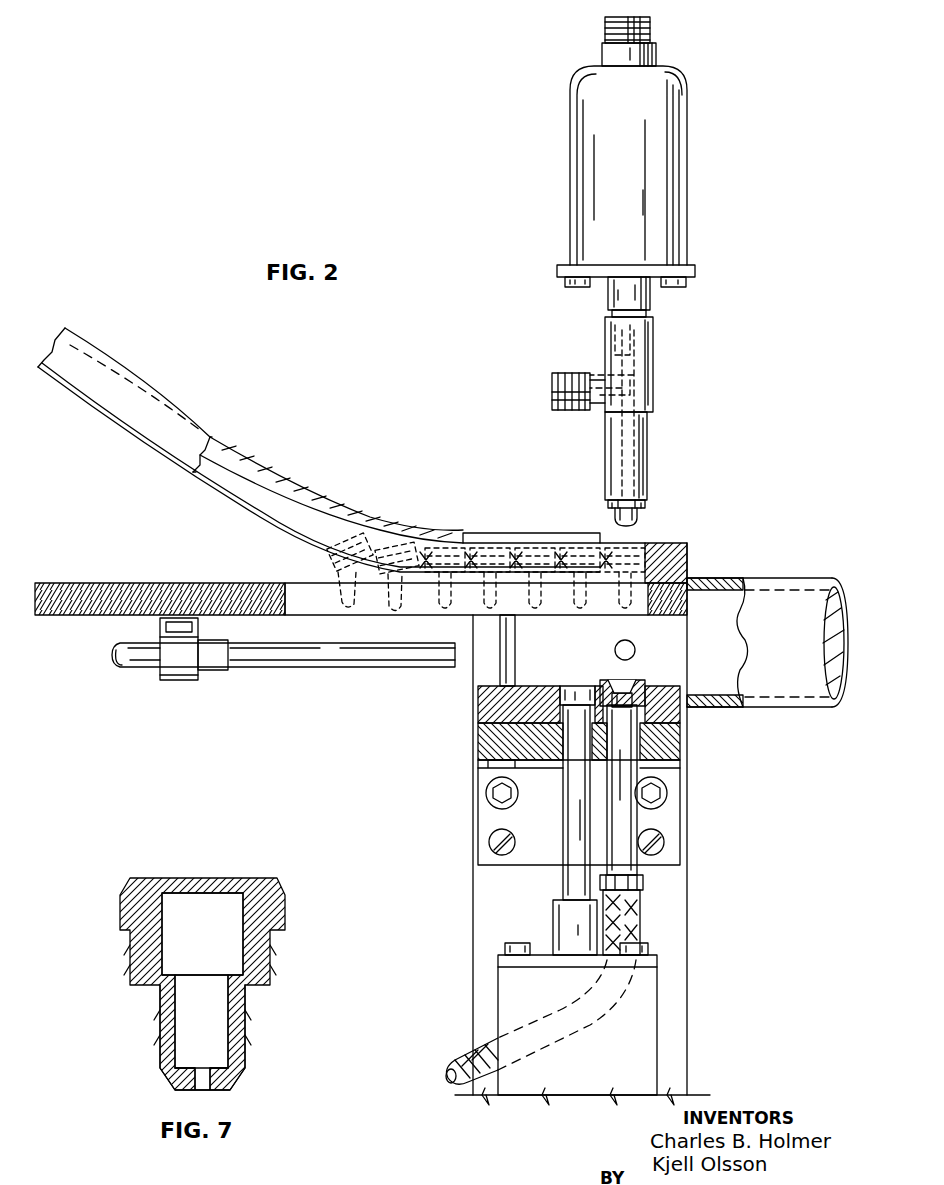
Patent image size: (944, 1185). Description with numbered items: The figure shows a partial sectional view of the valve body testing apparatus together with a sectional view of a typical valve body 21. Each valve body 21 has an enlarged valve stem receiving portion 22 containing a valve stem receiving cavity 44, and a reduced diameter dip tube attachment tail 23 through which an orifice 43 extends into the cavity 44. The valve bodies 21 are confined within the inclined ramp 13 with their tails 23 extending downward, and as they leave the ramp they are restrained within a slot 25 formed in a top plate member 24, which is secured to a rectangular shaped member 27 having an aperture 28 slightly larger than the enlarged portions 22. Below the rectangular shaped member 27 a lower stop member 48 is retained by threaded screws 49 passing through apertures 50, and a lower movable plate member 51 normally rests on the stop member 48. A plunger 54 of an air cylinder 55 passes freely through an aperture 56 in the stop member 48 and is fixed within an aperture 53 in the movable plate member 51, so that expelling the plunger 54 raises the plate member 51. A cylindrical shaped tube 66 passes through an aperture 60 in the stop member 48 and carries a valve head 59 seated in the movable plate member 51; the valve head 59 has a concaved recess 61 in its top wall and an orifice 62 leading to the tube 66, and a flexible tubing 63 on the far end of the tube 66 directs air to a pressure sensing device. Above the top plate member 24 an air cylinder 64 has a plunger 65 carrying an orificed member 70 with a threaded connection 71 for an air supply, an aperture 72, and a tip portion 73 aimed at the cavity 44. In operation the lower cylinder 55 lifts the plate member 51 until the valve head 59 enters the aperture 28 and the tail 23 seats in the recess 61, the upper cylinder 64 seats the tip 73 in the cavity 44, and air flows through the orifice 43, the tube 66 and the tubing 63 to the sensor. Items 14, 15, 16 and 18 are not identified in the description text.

In FIG. 2, the inclined ramp 13 is at (255, 456).
In FIG. 2, the plate 14 is at (692, 548).
In FIG. 2, the lever 15 is at (320, 656).
In FIG. 2, the tube 16 is at (808, 580).
In FIG. 2, the hole 18 is at (614, 647).
In FIG. 2, the valve body 21 is at (335, 551).
In FIG. 7, the valve body 21 is at (112, 950).
In FIG. 2, the enlarged valve stem receiving portion 22 is at (362, 532).
In FIG. 7, the enlarged valve stem receiving portion 22 is at (276, 955).
In FIG. 2, the dip tube attachment tail 23 is at (340, 577).
In FIG. 7, the dip tube attachment tail 23 is at (245, 1056).
In FIG. 2, the top plate member 24 is at (690, 558).
In FIG. 2, the slot 25 is at (645, 545).
In FIG. 2, the rectangular shaped member 27 is at (692, 582).
In FIG. 2, the aperture 28 is at (641, 606).
In FIG. 7, the orifice 43 is at (208, 1040).
In FIG. 7, the valve stem receiving cavity 44 is at (186, 902).
In FIG. 2, the lower stop member 48 is at (688, 745).
In FIG. 2, the threaded screw 49 is at (500, 660).
In FIG. 2, the aperture 50 is at (478, 742).
In FIG. 2, the lower movable plate member 51 is at (686, 712).
In FIG. 2, the aperture 53 is at (568, 688).
In FIG. 2, the plunger 54 is at (575, 822).
In FIG. 2, the air cylinder 55 is at (655, 1022).
In FIG. 2, the aperture 56 is at (559, 770).
In FIG. 2, the valve head 59 is at (650, 690).
In FIG. 2, the aperture 60 is at (688, 766).
In FIG. 2, the concaved recess 61 is at (612, 688).
In FIG. 2, the orifice 62 is at (623, 694).
In FIG. 2, the flexible tubing 63 is at (637, 912).
In FIG. 2, the air cylinder 64 is at (682, 150).
In FIG. 2, the plunger 65 is at (650, 316).
In FIG. 2, the cylindrical shaped tube 66 is at (636, 826).
In FIG. 2, the orificed member 70 is at (652, 428).
In FIG. 2, the threaded connection 71 is at (570, 372).
In FIG. 2, the aperture 72 is at (610, 439).
In FIG. 2, the tip portion 73 is at (636, 520).